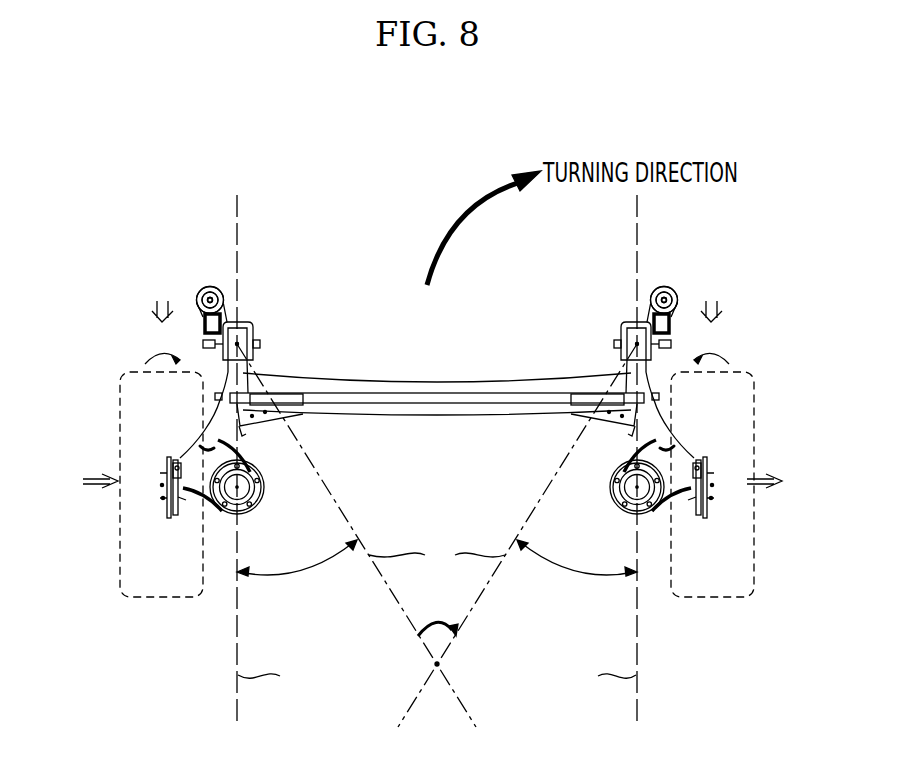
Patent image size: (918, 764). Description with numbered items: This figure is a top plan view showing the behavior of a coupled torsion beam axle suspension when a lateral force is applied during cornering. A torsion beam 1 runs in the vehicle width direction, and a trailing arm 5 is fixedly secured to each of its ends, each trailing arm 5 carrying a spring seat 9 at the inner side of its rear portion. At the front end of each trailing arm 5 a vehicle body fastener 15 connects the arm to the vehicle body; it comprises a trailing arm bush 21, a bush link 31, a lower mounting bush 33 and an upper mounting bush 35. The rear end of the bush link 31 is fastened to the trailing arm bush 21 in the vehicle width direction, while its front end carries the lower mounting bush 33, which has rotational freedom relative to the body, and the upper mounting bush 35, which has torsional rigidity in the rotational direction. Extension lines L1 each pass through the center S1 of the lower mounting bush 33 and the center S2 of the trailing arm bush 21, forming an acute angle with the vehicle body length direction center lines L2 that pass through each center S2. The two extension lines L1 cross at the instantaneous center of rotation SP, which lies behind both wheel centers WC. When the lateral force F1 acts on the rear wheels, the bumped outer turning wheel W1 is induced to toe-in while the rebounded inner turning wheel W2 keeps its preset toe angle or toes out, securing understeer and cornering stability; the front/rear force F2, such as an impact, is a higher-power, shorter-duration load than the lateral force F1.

The torsion beam 1 is at (437, 416).
The trailing arm 5 is at (629, 440).
The spring seat 9 is at (621, 507).
The vehicle body fastener 15 is at (692, 275).
The trailing arm bush 21 is at (620, 335).
The bush link 31 is at (682, 322).
The lower mounting bush 33 is at (664, 287).
The upper mounting bush 35 is at (652, 312).
The center of the lower mounting bush S1 is at (656, 290).
The center of the trailing arm bush S2 is at (613, 345).
The lateral force F1 is at (432, 480).
The front/rear force F2 is at (436, 296).
The extension line L1 is at (437, 553).
The vehicle body length direction center line L2 is at (437, 678).
The wheel center WC is at (157, 490).
The outer turning wheel W1 is at (178, 597).
The inner turning wheel W2 is at (726, 597).
The instantaneous center of rotation SP is at (443, 665).